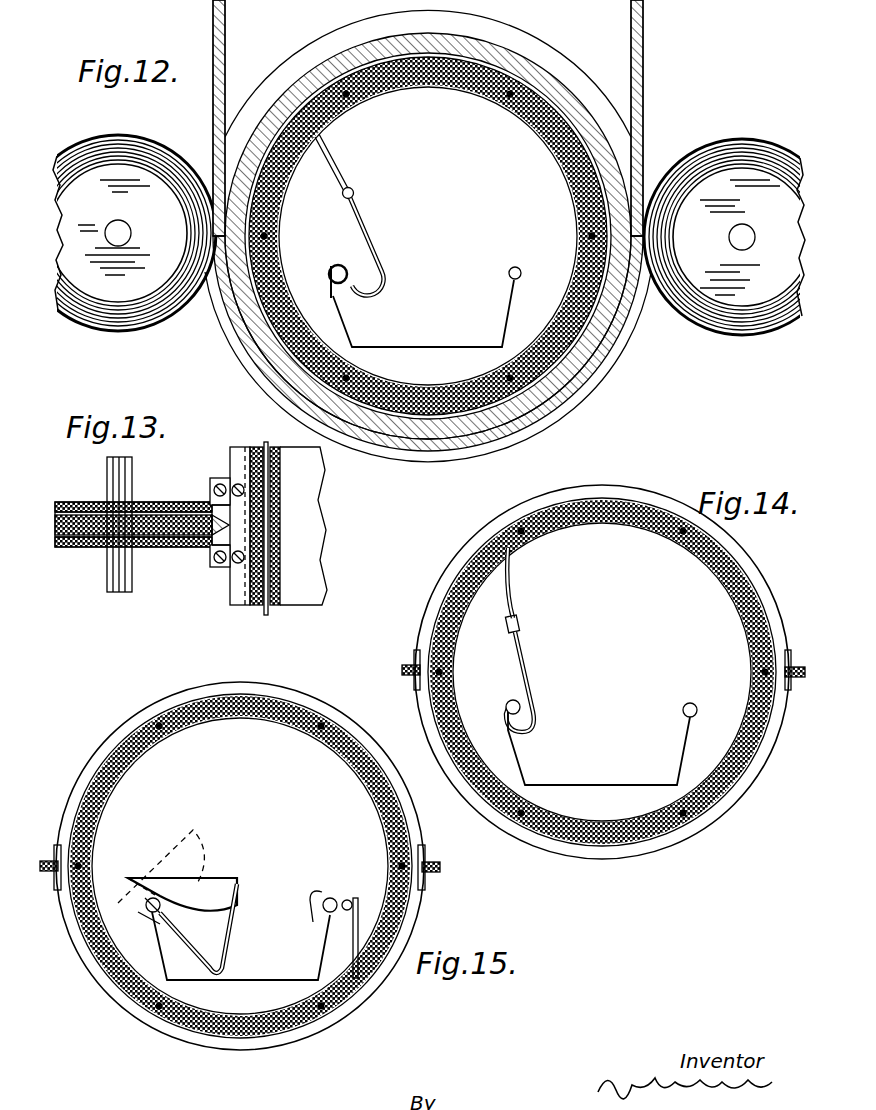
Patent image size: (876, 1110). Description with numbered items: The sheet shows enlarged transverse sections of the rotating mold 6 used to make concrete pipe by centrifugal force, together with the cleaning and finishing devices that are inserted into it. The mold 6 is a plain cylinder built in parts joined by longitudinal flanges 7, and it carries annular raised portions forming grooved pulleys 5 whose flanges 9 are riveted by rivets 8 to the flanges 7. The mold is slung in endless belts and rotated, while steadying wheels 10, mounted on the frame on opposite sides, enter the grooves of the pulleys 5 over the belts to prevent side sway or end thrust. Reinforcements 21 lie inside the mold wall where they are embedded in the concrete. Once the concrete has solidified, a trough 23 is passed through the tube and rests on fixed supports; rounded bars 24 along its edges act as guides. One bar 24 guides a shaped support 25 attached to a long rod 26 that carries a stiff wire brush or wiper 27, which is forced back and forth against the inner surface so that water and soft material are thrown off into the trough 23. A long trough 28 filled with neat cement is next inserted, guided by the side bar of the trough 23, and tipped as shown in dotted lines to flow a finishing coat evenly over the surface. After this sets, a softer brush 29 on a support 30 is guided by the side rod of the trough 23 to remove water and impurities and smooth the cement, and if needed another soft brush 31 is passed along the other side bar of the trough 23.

In FIG. 12, the grooved pulley 5 is at (557, 92).
In FIG. 13, the grooved pulley 5 is at (222, 548).
In FIG. 12, the mold 6 is at (575, 355).
In FIG. 13, the mold 6 is at (247, 606).
In FIG. 14, the mold 6 is at (774, 600).
In FIG. 15, the mold 6 is at (423, 838).
In FIG. 13, the longitudinal flange 7 is at (229, 456).
In FIG. 14, the longitudinal flange 7 is at (404, 665).
In FIG. 15, the longitudinal flange 7 is at (52, 861).
In FIG. 13, the rivet 8 is at (236, 563).
In FIG. 13, the flange 9 is at (210, 483).
In FIG. 12, the steadying wheel 10 is at (160, 310).
In FIG. 13, the steadying wheel 10 is at (172, 536).
In FIG. 12, the reinforcement 21 is at (410, 402).
In FIG. 13, the reinforcement 21 is at (270, 586).
In FIG. 14, the reinforcement 21 is at (736, 784).
In FIG. 15, the reinforcement 21 is at (298, 706).
In FIG. 12, the trough 23 is at (444, 346).
In FIG. 12, the rounded bar 24 is at (337, 266).
In FIG. 12, the support 25 is at (384, 262).
In FIG. 12, the long rod 26 is at (355, 193).
In FIG. 12, the wire brush 27 is at (330, 163).
In FIG. 15, the long trough 28 is at (222, 872).
In FIG. 14, the softer brush 29 is at (509, 590).
In FIG. 14, the support 30 is at (531, 662).
In FIG. 15, the soft brush 31 is at (355, 952).